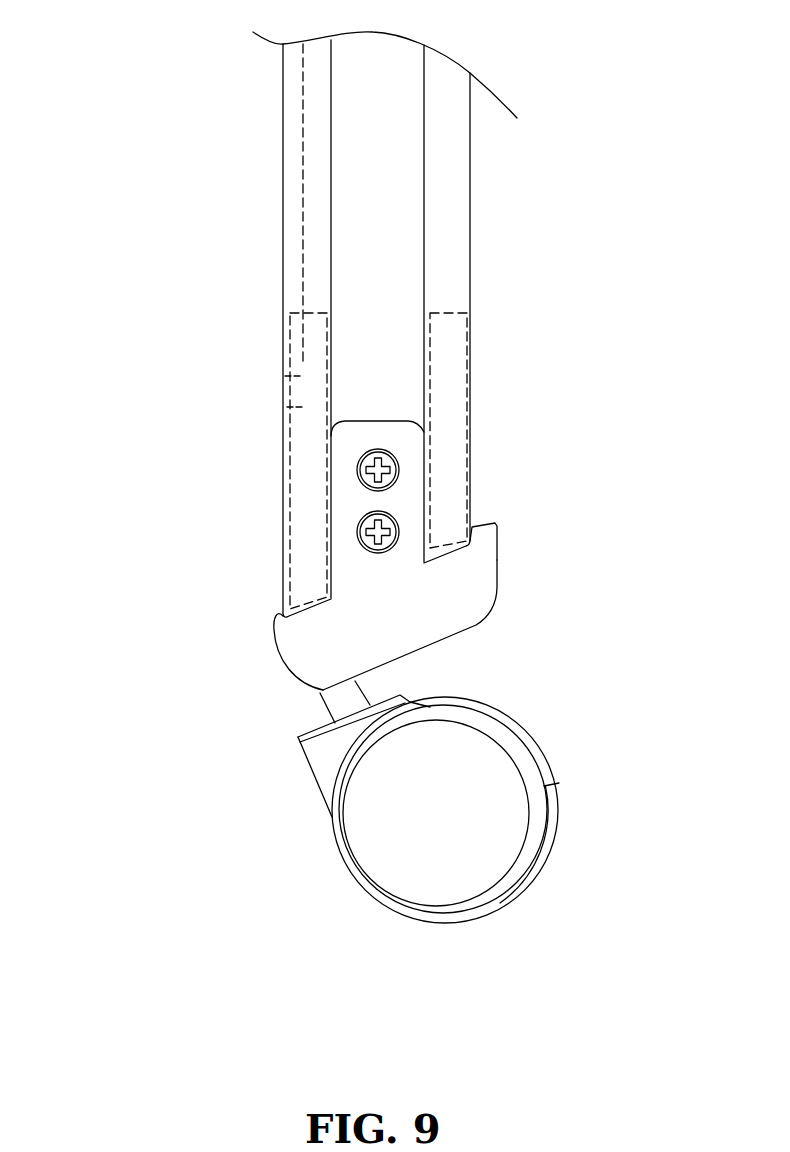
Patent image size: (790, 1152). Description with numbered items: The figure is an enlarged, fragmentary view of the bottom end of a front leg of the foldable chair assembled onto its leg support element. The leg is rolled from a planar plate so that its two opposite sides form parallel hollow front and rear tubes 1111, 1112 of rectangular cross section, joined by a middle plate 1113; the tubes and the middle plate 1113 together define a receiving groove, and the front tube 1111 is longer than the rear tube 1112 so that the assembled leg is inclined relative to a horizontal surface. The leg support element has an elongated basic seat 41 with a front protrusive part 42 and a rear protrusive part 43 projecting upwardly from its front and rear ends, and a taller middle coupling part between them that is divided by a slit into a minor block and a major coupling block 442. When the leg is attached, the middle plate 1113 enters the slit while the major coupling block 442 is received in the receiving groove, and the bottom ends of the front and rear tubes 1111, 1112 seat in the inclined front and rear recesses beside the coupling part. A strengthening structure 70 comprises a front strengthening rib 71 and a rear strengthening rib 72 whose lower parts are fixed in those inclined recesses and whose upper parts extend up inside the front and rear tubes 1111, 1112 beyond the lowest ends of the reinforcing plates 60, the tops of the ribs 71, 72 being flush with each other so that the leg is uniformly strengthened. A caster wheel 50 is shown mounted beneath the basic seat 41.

The middle plate 1113 is at (368, 60).
The front tube 1111 is at (313, 180).
The rear tube 1112 is at (447, 200).
The reinforcing plate 60 is at (293, 100).
The strengthening structure 70 is at (288, 461).
The front strengthening rib 71 is at (300, 406).
The rear strengthening rib 72 is at (375, 428).
The major coupling block 442 is at (393, 446).
The rear protrusive part 43 is at (487, 532).
The basic seat 41 is at (450, 623).
The front protrusive part 42 is at (277, 617).
The wheel 50 is at (465, 867).